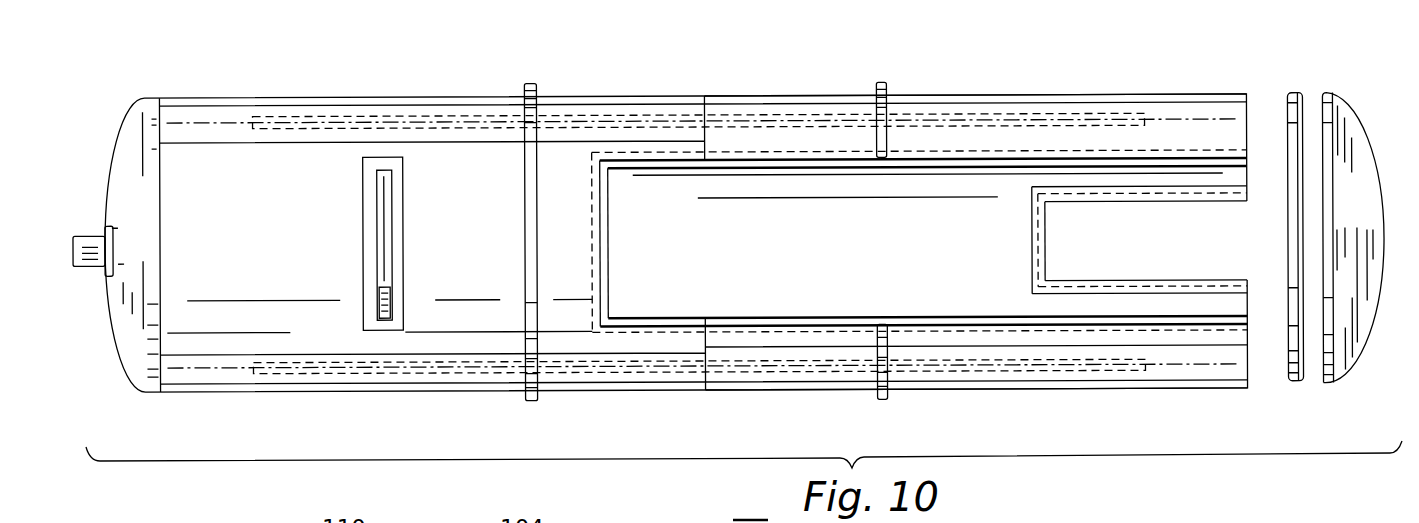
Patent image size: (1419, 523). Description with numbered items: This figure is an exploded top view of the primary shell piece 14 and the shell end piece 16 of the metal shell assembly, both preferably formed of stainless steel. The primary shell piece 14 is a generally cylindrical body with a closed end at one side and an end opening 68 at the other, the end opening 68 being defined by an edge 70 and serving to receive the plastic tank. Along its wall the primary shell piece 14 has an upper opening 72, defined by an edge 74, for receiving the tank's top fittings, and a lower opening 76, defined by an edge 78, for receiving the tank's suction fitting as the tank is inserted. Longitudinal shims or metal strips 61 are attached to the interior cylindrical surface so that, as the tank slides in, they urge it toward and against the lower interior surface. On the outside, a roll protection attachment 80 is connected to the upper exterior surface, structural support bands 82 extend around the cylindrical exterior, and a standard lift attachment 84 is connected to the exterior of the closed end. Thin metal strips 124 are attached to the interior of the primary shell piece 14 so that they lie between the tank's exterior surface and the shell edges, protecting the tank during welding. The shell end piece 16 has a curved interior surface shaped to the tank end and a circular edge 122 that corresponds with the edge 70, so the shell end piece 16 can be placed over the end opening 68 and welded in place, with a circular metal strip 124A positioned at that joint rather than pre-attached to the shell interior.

The primary shell piece 14 is at (378, 99).
The shell end piece 16 is at (1360, 257).
The metal strips 61 is at (300, 117).
The end opening 68 is at (1250, 99).
The edge 70 is at (1250, 390).
The upper opening 72 is at (787, 195).
The edge 74 is at (605, 287).
The lower opening 76 is at (1045, 274).
The edge 78 is at (1133, 288).
The roll protection attachment 80 is at (380, 250).
The structural support bands 82 is at (525, 265).
The standard lift attachment 84 is at (75, 234).
The circular edge 122 is at (1323, 386).
The thin metal strips 124 is at (937, 241).
The circular metal strip 124A is at (1290, 230).